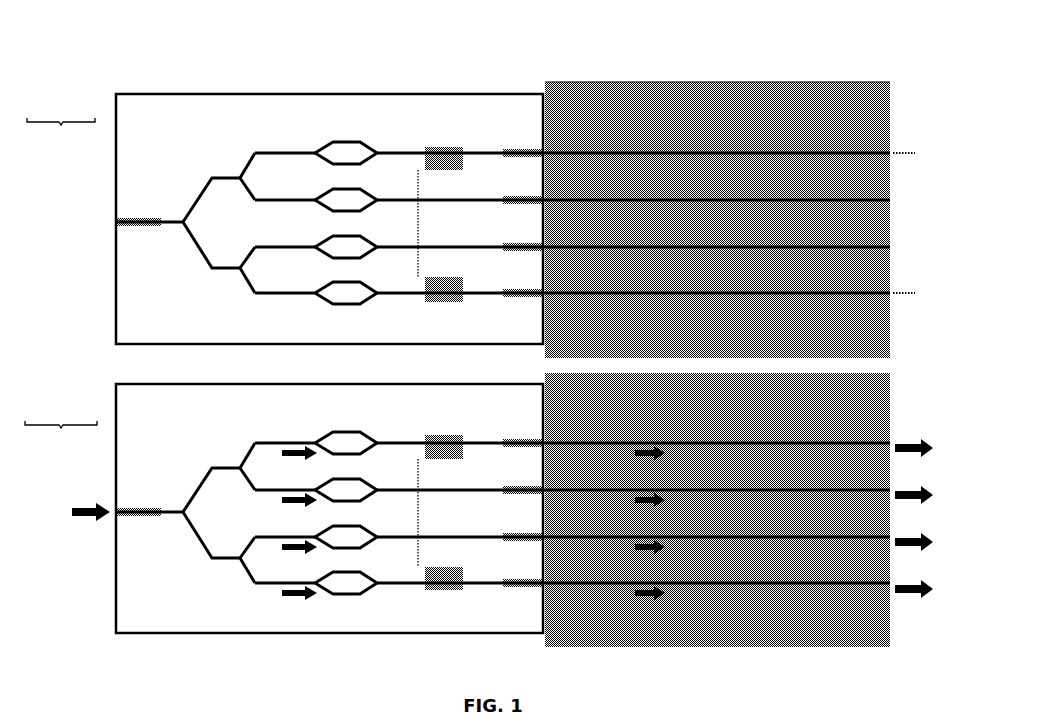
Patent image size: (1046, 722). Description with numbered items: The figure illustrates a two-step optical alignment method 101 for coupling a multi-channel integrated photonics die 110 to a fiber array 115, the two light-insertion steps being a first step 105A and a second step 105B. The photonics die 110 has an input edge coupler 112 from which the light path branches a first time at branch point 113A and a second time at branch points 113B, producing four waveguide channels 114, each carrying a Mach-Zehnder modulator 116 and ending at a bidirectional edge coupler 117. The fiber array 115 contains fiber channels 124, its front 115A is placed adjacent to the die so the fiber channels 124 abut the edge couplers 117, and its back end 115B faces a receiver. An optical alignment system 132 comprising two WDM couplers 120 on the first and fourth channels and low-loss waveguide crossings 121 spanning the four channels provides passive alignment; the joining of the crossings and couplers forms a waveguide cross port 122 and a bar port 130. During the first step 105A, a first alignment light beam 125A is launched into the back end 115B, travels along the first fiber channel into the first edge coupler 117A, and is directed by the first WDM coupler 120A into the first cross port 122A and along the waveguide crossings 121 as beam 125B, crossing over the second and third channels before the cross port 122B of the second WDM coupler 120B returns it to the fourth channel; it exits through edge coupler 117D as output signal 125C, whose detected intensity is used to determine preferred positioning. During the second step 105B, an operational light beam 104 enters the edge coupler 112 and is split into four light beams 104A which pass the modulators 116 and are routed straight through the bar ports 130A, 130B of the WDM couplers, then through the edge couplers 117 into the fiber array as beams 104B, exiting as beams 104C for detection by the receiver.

The optical alignment method 101 is at (205, 60).
The second light beam 104 is at (100, 520).
The four distinct light beams 104A is at (272, 600).
The light beams in fiber channels 104B is at (630, 602).
The exiting light beams 104C is at (895, 604).
The first step 105A is at (61, 128).
The second step 105B is at (61, 426).
The multi-channel integrated photonics die 110 is at (131, 130).
The edge coupler 112 is at (117, 224).
The first branch point 113A is at (183, 226).
The second branch point 113B is at (240, 176).
The waveguide channels 114 is at (250, 301).
The fiber array 115 is at (843, 114).
The front of fiber array 115A is at (547, 74).
The back end of fiber array 115B is at (882, 70).
The modulators 116 is at (361, 143).
The edge couplers 117 is at (503, 140).
The first edge coupler 117A is at (548, 146).
The fourth edge coupler 117D is at (535, 299).
The WDM couplers 120 is at (462, 589).
The first WDM coupler 120A is at (460, 147).
The second WDM coupler 120B is at (462, 300).
The waveguide crossings 121 is at (417, 220).
The waveguide cross port 122 is at (423, 169).
The first waveguide cross port 122A is at (420, 458).
The second cross port 122B is at (418, 570).
The fiber channels 124 is at (600, 300).
The first light beam 125A is at (901, 150).
The first light beam along waveguide crossings 125B is at (420, 219).
The output optical signal 125C is at (901, 297).
The bar port 130 is at (430, 147).
The bar port of first WDM coupler 130A is at (432, 438).
The bar port of second WDM coupler 130B is at (412, 588).
The optical alignment system 132 is at (468, 312).